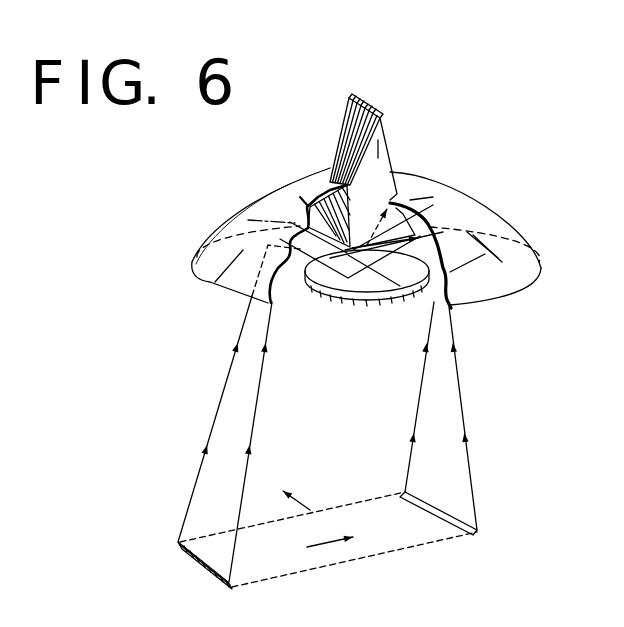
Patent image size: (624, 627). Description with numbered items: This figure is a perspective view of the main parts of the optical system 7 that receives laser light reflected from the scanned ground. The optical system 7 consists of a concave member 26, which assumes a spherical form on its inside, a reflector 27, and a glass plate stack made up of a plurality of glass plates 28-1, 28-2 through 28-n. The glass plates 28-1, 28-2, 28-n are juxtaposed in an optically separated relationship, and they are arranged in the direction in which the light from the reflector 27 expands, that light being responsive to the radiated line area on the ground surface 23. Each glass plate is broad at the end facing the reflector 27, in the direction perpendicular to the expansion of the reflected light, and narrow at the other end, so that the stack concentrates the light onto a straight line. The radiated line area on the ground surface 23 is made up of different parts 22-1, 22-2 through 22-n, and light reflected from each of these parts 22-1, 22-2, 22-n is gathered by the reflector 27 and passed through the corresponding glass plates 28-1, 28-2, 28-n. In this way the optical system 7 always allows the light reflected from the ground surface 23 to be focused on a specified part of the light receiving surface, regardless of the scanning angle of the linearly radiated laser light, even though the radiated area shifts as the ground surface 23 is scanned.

The optical system 7 is at (235, 208).
The part of radiated line area 22-1 is at (178, 542).
The part of radiated line area 22-2 is at (183, 551).
The part of radiated line area 22-n is at (226, 586).
The ground surface 23 is at (350, 554).
The concave member 26 is at (224, 286).
The reflector 27 is at (362, 300).
The glass plate 28-1 is at (383, 120).
The glass plate 28-2 is at (380, 113).
The glass plate 28-n is at (353, 97).